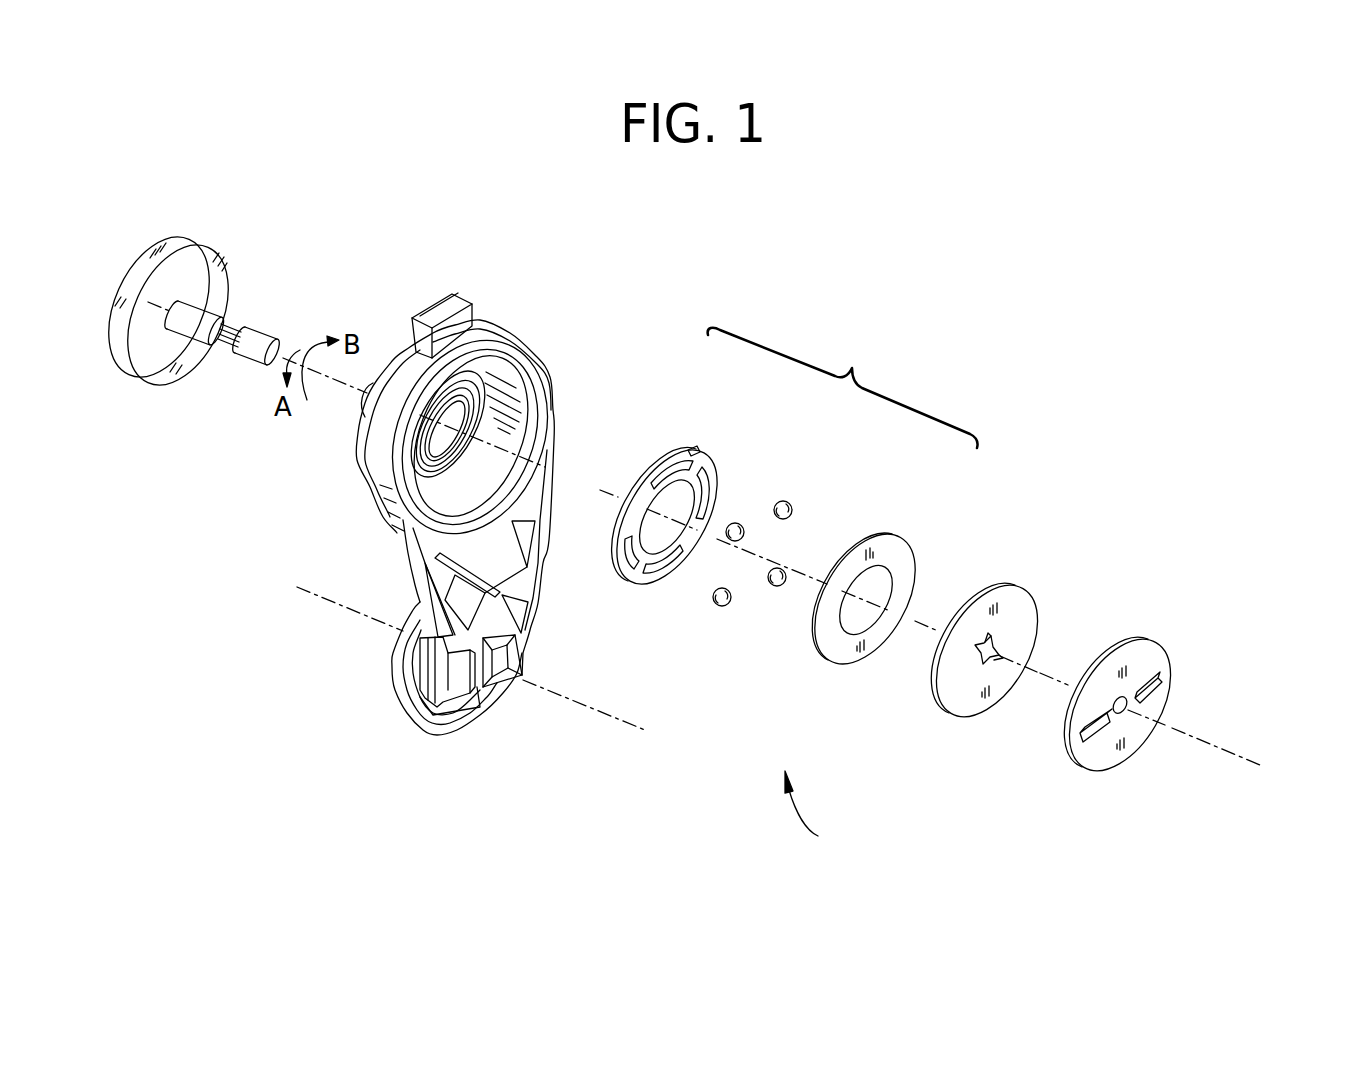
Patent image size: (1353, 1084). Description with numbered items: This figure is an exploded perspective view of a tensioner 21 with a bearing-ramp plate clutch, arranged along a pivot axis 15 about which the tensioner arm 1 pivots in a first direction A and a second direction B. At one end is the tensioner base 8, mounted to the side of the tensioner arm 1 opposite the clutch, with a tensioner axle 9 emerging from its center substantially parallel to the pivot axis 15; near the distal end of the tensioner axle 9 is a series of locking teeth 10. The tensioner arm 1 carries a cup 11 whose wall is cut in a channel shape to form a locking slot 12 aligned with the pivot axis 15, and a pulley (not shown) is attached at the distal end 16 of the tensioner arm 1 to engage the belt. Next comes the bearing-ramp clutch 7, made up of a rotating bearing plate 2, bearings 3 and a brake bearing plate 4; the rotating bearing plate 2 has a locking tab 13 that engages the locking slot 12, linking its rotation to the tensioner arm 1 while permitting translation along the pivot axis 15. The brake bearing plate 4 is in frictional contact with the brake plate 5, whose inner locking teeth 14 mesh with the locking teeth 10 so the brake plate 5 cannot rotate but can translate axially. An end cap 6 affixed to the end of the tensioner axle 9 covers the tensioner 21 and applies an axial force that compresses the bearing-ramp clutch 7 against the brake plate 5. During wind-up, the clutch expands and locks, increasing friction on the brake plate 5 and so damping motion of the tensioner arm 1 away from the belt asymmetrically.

The tensioner arm 1 is at (407, 563).
The rotating bearing plate 2 is at (712, 462).
The bearings 3 is at (790, 500).
The brake bearing plate 4 is at (898, 538).
The brake plate 5 is at (1018, 592).
The end cap 6 is at (1150, 640).
The bearing-ramp clutch 7 is at (843, 388).
The tensioner base 8 is at (212, 250).
The tensioner axle 9 is at (233, 296).
The locking teeth 10 is at (242, 320).
The cup 11 is at (500, 376).
The locking slot 12 is at (505, 355).
The locking tab 13 is at (690, 448).
The inner locking teeth 14 is at (993, 661).
The pivot axis 15 is at (1227, 752).
The distal end 16 is at (500, 685).
The tensioner 21 is at (821, 810).